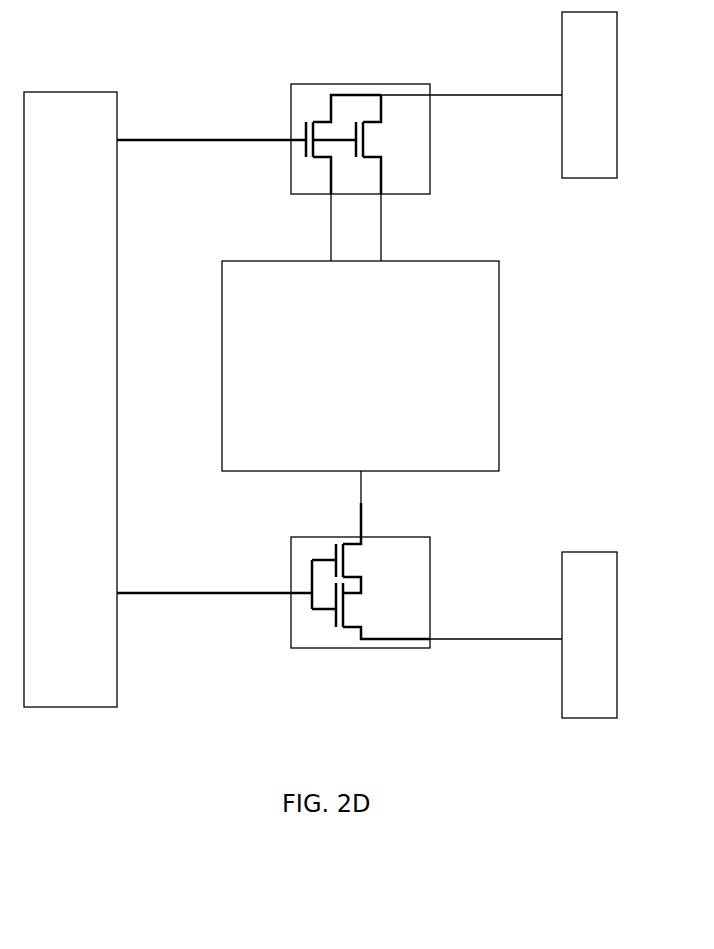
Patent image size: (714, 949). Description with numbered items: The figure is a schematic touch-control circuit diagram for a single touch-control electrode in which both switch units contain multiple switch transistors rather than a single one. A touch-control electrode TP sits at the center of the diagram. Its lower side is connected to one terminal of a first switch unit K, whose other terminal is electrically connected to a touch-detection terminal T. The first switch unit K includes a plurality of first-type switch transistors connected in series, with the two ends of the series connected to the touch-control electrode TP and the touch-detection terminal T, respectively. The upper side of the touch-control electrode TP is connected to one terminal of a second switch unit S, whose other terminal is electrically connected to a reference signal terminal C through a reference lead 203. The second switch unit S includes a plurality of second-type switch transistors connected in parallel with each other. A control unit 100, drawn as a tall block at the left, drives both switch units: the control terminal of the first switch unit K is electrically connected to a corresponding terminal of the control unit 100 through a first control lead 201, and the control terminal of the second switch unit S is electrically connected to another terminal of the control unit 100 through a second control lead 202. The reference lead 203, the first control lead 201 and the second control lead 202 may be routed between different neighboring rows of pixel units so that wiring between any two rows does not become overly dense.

The control unit 100 is at (103, 313).
The first control lead 201 is at (163, 593).
The second control lead 202 is at (167, 140).
The reference lead 203 is at (462, 95).
The second switch unit S is at (317, 95).
The first switch unit K is at (442, 548).
The touch-control electrode TP is at (478, 380).
The reference signal terminal C is at (589, 95).
The touch-detection terminal T is at (589, 635).